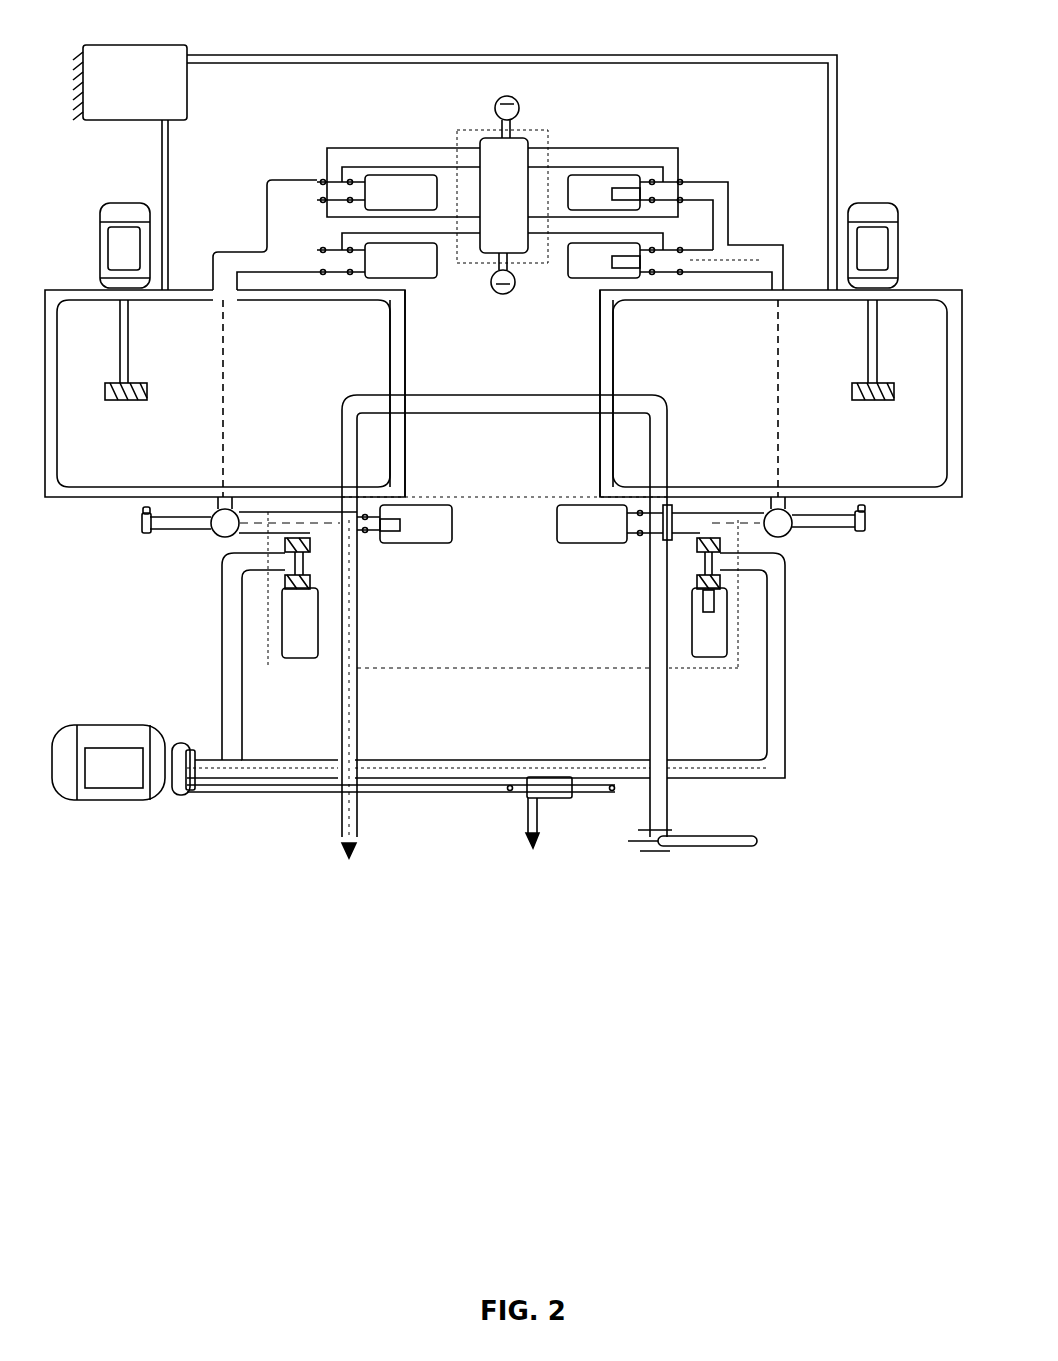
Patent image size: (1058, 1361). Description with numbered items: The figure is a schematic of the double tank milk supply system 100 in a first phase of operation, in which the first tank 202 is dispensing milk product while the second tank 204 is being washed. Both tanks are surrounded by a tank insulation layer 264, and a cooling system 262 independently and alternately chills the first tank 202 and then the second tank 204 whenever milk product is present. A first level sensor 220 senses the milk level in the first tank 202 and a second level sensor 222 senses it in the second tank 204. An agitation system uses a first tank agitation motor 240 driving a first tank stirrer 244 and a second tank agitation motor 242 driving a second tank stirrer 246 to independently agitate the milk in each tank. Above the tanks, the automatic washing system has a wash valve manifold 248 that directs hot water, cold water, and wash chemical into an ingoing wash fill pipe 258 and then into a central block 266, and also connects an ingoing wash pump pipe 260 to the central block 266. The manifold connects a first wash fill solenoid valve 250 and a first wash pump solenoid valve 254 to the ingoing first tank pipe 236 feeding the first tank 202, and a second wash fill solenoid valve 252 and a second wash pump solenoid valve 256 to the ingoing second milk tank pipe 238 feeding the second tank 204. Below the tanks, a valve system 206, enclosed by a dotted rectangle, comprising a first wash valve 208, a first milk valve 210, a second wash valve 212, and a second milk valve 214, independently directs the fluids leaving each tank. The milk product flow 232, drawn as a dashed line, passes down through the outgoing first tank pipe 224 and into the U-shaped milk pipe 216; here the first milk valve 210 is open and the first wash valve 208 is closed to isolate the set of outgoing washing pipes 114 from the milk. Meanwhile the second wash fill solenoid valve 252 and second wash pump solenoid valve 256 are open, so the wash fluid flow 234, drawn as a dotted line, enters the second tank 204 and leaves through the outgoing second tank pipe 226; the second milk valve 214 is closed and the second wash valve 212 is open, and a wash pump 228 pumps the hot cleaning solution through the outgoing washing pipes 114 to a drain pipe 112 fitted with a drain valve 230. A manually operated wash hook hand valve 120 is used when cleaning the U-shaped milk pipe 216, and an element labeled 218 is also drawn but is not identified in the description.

The double tank milk supply system 100 is at (998, 4).
The drain pipe 112 is at (240, 794).
The set of outgoing washing pipes 114 is at (222, 672).
The wash hook hand valve 120 is at (702, 847).
The first tank 202 is at (302, 392).
The second tank 204 is at (739, 392).
The valve system 206 is at (492, 676).
The first wash valve 208 is at (300, 652).
The first milk valve 210 is at (420, 548).
The second wash valve 212 is at (716, 652).
The second milk valve 214 is at (586, 548).
The U-shaped milk pipe 216 is at (480, 414).
The bypass line 218 is at (700, 762).
The first level sensor 220 is at (166, 534).
The second level sensor 222 is at (836, 529).
The outgoing first tank pipe 224 is at (216, 538).
The outgoing second tank pipe 226 is at (790, 538).
The wash pump 228 is at (105, 725).
The drain valve 230 is at (546, 800).
The milk product flow 232 is at (220, 437).
The wash fluid flow 234 is at (785, 437).
The ingoing first tank pipe 236 is at (214, 252).
The ingoing second milk tank pipe 238 is at (784, 250).
The first tank agitation motor 240 is at (106, 248).
The second tank agitation motor 242 is at (894, 243).
The first tank stirrer 244 is at (110, 381).
The second tank stirrer 246 is at (890, 381).
The wash valve manifold 248 is at (548, 130).
The first wash fill solenoid valve 250 is at (380, 173).
The second wash fill solenoid valve 252 is at (612, 173).
The first wash pump solenoid valve 254 is at (410, 280).
The second wash pump solenoid valve 256 is at (602, 280).
The ingoing wash fill pipe 258 is at (497, 110).
The ingoing wash pump pipe 260 is at (501, 295).
The cooling system 262 is at (190, 92).
The tank insulation layer 264 is at (405, 364).
The central block 266 is at (522, 207).